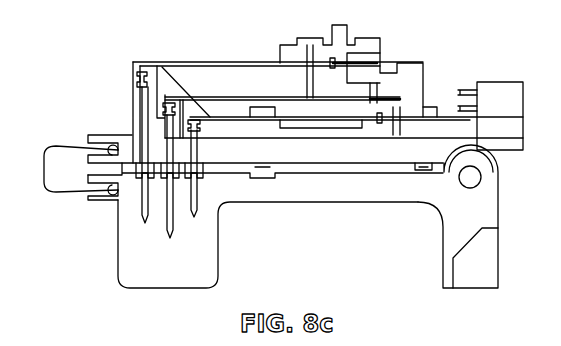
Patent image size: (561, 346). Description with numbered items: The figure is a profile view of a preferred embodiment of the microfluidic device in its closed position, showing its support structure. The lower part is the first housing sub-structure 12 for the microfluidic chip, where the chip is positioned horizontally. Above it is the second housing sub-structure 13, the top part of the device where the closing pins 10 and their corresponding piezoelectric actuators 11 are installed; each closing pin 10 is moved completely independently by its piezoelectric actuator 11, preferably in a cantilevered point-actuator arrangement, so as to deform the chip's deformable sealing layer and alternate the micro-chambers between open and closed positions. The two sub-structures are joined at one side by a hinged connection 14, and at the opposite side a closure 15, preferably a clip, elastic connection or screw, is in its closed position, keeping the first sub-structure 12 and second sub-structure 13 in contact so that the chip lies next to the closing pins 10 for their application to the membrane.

The closing pins 10 is at (143, 100).
The piezoelectric actuators 11 is at (195, 62).
The first housing sub-structure 12 is at (207, 262).
The second housing sub-structure 13 is at (440, 125).
The connection 14 is at (466, 183).
The closure 15 is at (63, 143).